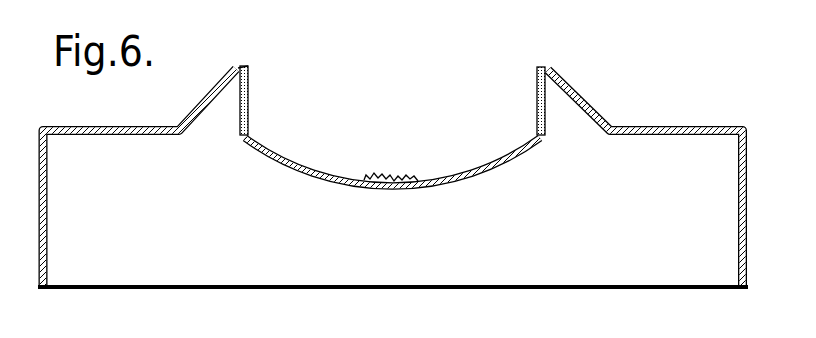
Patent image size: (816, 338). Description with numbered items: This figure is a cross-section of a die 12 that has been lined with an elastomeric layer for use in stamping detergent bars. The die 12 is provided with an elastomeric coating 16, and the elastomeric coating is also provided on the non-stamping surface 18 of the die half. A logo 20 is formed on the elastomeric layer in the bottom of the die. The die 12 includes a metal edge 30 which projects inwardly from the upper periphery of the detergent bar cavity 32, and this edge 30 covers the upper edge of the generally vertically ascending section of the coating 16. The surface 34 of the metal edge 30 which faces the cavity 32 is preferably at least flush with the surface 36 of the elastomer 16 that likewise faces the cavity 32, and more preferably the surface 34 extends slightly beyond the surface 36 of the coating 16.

The die 12 is at (508, 260).
The elastomeric coating 16 is at (437, 173).
The non-stamping surface 18 is at (662, 127).
The logo 20 is at (396, 181).
The metal edge 30 is at (242, 66).
The detergent bar cavity 32 is at (401, 88).
The surface of edge 34 is at (538, 68).
The surface of elastomer 36 is at (250, 100).